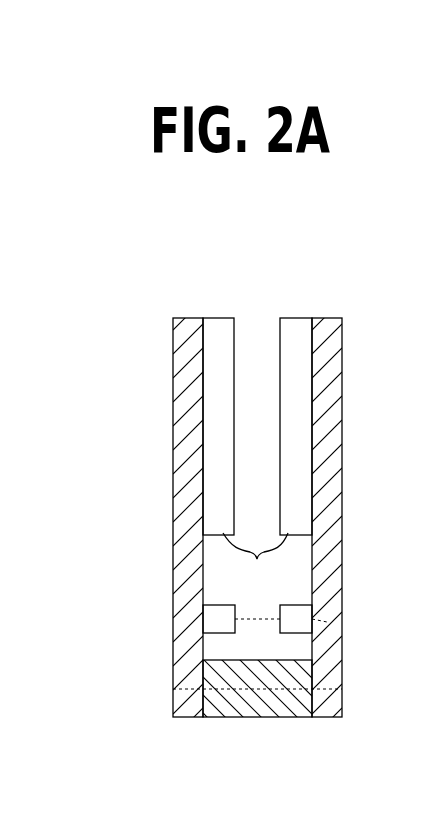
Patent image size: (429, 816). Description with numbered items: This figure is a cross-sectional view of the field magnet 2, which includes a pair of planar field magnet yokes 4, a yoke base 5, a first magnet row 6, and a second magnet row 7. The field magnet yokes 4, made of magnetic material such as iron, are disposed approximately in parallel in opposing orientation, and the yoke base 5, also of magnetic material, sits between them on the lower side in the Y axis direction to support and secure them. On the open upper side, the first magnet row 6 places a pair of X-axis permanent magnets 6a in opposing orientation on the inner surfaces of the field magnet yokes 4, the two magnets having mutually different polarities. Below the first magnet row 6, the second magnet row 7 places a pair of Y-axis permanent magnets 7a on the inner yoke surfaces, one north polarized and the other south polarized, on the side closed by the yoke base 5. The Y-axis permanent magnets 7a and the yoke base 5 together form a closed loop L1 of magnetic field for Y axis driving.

The field magnet 2 is at (170, 287).
The field magnet yokes 4 is at (325, 318).
The yoke base 5 is at (250, 718).
The first magnet row 6 is at (304, 550).
The X-axis permanent magnets 6a is at (255, 563).
The second magnet row 7 is at (107, 553).
The Y-axis permanent magnets 7a is at (280, 605).
The closed loop of magnetic field L1 is at (181, 718).